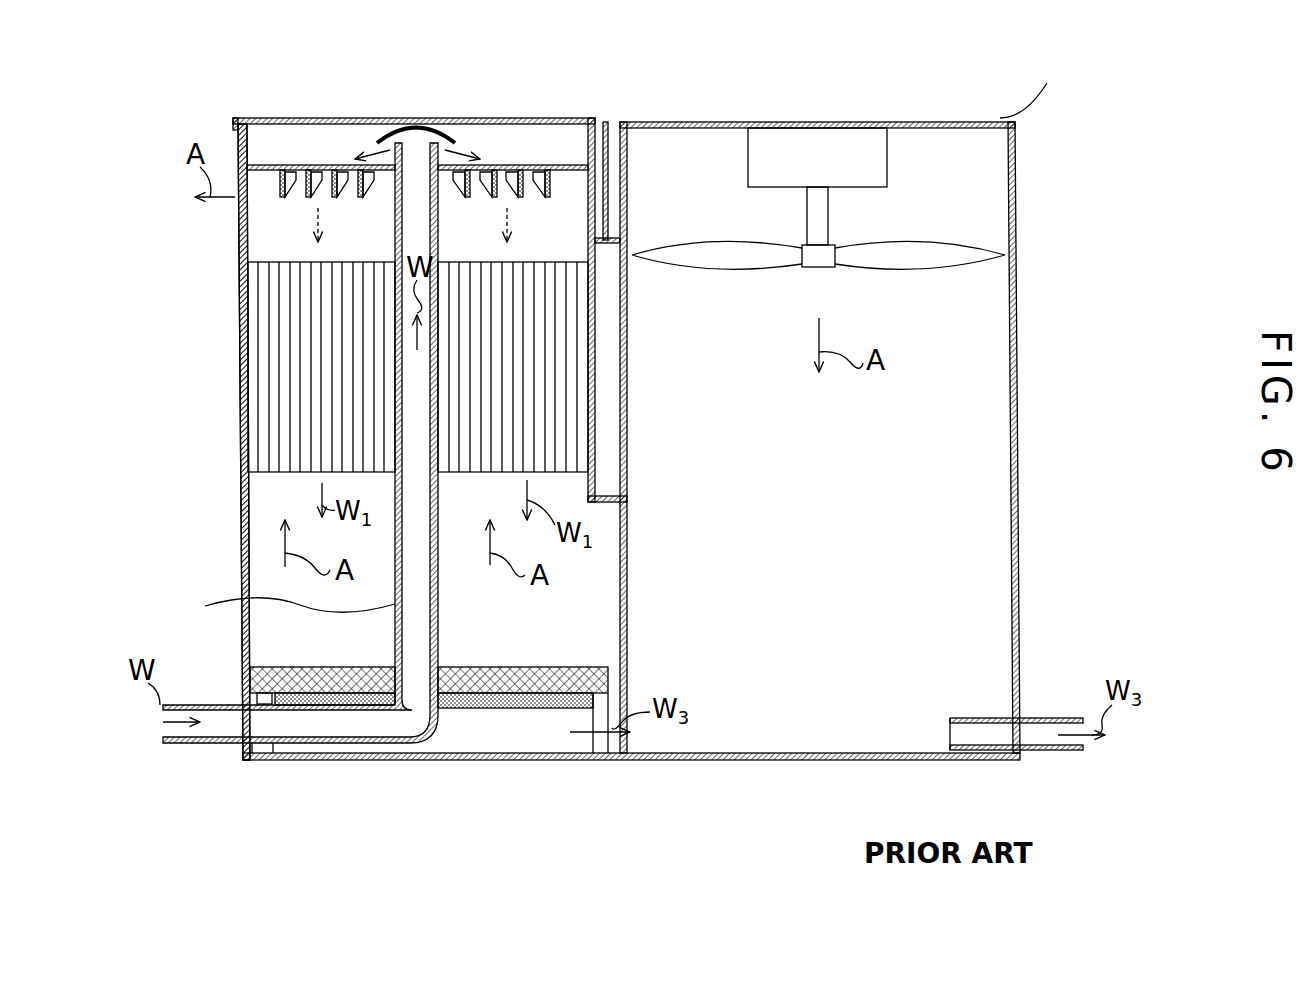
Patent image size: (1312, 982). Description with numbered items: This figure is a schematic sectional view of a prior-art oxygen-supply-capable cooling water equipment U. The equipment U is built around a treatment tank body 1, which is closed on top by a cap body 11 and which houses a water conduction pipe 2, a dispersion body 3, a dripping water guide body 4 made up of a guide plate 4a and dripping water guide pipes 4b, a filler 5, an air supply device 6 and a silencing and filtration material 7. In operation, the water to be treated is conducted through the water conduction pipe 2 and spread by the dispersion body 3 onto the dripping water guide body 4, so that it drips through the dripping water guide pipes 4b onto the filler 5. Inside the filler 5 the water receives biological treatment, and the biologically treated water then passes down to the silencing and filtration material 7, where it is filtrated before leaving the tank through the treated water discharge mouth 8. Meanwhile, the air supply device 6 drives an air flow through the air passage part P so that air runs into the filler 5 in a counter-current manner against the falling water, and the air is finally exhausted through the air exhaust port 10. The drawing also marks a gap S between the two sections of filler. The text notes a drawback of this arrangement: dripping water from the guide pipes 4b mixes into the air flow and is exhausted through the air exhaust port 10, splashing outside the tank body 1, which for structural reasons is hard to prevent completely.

The treatment tank body 1 is at (240, 438).
The water conduction pipe 2 is at (289, 608).
The dispersion body 3 is at (447, 127).
The dripping water guide body 4 is at (428, 151).
The guide plate 4a is at (555, 166).
The dripping water guide pipe 4b is at (548, 185).
The filler 5 is at (293, 355).
The air supply device 6 is at (893, 147).
The silencing and filtration material 7 is at (545, 665).
The treated water discharge mouth 8 is at (1052, 718).
The air exhaust port 10 is at (240, 228).
The cap body 11 is at (265, 118).
The oxygen-supply-capable cooling water equipment U is at (1035, 252).
The air passage part P is at (808, 522).
The gap S is at (455, 490).